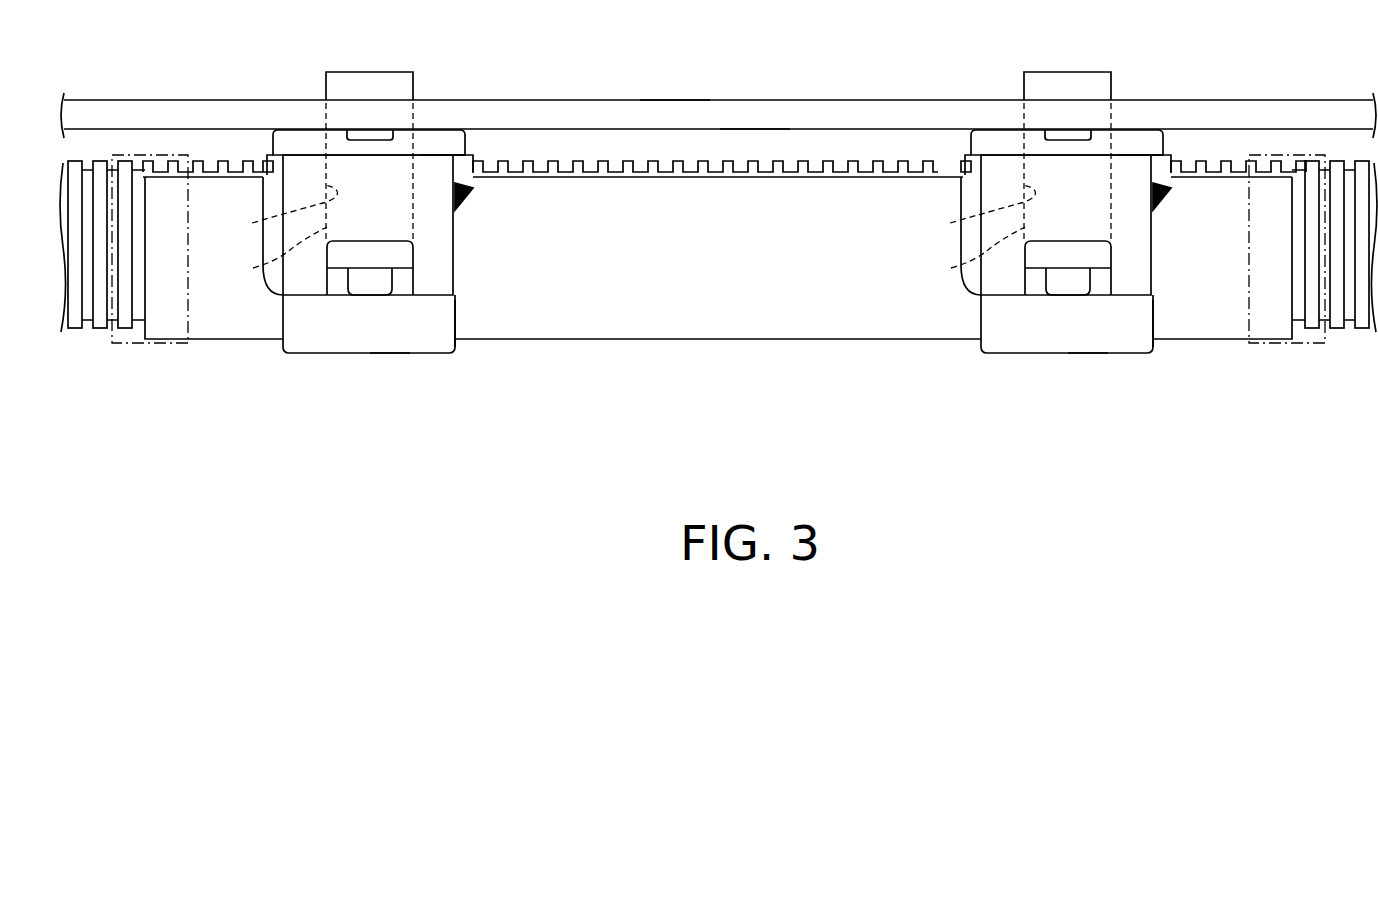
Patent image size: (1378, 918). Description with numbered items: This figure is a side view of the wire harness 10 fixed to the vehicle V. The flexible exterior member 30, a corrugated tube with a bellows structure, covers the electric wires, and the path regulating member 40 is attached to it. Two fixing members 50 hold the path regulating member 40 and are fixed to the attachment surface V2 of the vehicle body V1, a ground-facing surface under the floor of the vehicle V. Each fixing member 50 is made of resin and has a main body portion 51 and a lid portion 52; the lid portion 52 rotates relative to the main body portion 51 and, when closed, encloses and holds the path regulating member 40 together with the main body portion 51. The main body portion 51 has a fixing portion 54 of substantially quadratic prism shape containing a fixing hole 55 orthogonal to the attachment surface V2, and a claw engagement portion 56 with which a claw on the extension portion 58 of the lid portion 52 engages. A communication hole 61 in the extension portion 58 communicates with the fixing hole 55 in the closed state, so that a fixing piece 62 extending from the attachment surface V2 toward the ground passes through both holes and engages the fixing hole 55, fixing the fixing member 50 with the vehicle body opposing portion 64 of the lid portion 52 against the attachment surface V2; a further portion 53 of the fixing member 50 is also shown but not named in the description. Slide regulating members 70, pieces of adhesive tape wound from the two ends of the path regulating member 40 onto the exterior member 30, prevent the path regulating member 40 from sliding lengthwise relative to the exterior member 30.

The wire harness 10 is at (551, 367).
The exterior member 30 is at (605, 160).
The path regulating member 40 is at (716, 340).
The fixing member 50 is at (339, 355).
The main body portion 51 is at (390, 355).
The lid portion 52 is at (298, 128).
The slider side wall 53 is at (423, 335).
The fixing portion 54 is at (435, 251).
The fixing hole 55 is at (252, 223).
The claw engagement portion 56 is at (260, 163).
The extension portion 58 is at (442, 140).
The communication hole 61 is at (333, 140).
The fixing piece 62 is at (253, 268).
The vehicle body opposing portion 64 is at (428, 140).
The slide regulating member 70 is at (127, 347).
The vehicle V is at (1332, 100).
The vehicle body V1 is at (677, 112).
The attachment surface V2 is at (752, 133).